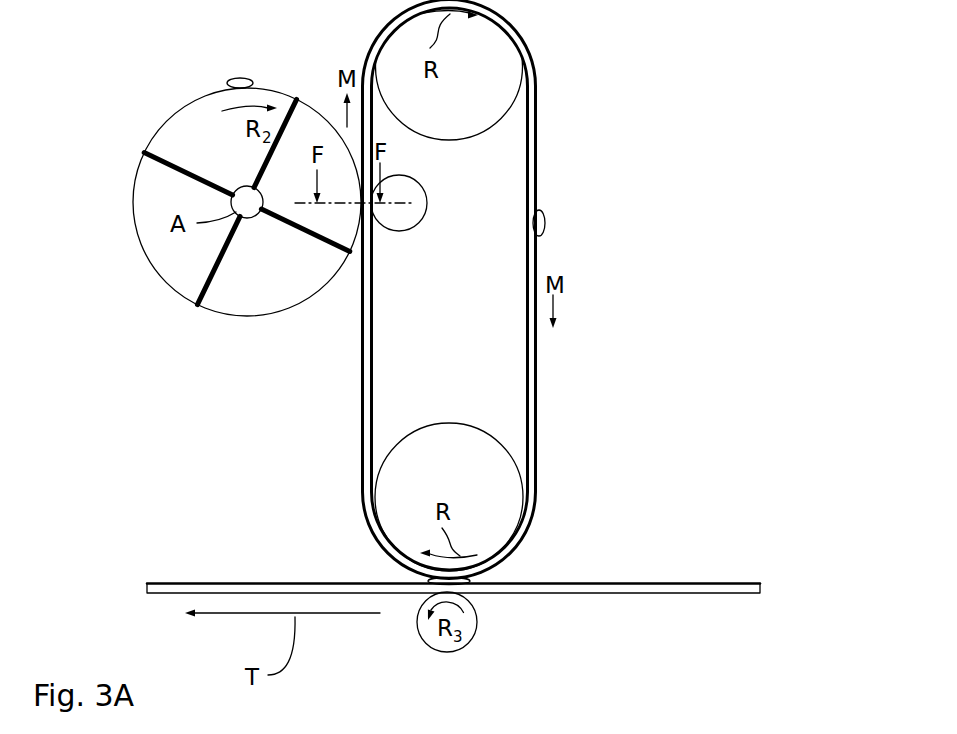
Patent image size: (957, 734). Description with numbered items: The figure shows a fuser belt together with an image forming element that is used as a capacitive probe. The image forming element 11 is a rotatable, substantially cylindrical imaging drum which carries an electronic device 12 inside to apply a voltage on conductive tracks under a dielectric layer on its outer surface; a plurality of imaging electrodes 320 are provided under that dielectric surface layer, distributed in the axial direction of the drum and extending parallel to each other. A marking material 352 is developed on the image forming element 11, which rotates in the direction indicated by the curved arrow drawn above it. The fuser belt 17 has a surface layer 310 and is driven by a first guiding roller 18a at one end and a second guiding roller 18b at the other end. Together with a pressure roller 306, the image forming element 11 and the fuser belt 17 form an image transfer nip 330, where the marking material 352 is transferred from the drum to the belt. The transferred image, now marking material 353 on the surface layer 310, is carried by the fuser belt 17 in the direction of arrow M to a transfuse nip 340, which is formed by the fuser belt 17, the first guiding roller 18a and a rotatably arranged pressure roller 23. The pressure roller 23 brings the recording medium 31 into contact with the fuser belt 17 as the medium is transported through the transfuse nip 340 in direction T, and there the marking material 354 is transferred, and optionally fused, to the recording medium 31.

The image forming element 11 is at (285, 279).
The electronic device 12 is at (183, 167).
The fuser belt 17 is at (530, 373).
The first guiding roller 18a is at (516, 97).
The second guiding roller 18b is at (397, 450).
The pressure roller 23 is at (432, 648).
The recording medium 31 is at (638, 590).
The pressure roller 306 is at (427, 200).
The surface layer 310 is at (362, 439).
The imaging electrodes 320 is at (126, 205).
The image transfer nip 330 is at (356, 263).
The transfuse nip 340 is at (396, 572).
The marking material 352 is at (236, 78).
The marking material 353 is at (545, 223).
The marking material 354 is at (462, 586).